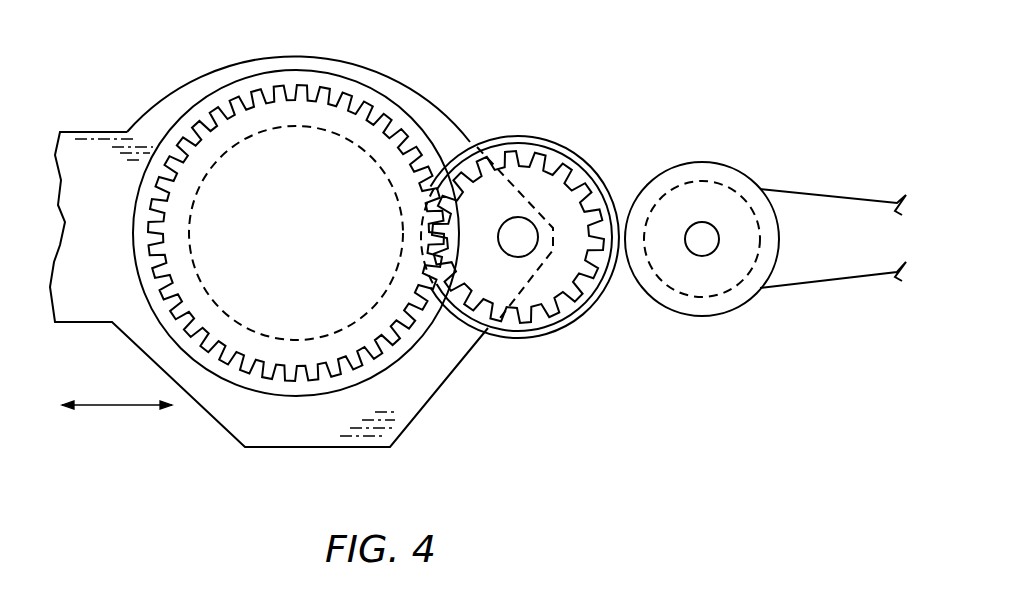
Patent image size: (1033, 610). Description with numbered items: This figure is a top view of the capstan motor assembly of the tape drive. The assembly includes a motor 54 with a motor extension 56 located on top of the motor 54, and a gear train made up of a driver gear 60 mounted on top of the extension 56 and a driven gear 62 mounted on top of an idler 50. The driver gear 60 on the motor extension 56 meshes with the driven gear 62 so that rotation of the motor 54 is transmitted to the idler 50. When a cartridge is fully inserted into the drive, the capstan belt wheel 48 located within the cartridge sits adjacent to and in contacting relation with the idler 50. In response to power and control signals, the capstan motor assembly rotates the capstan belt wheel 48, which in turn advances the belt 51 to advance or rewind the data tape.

The capstan belt wheel 48 is at (703, 168).
The idler 50 is at (587, 162).
The belt 51 is at (813, 197).
The motor 54 is at (358, 95).
The motor extension 56 is at (270, 128).
The driver gear 60 is at (222, 133).
The driven gear 62 is at (518, 190).